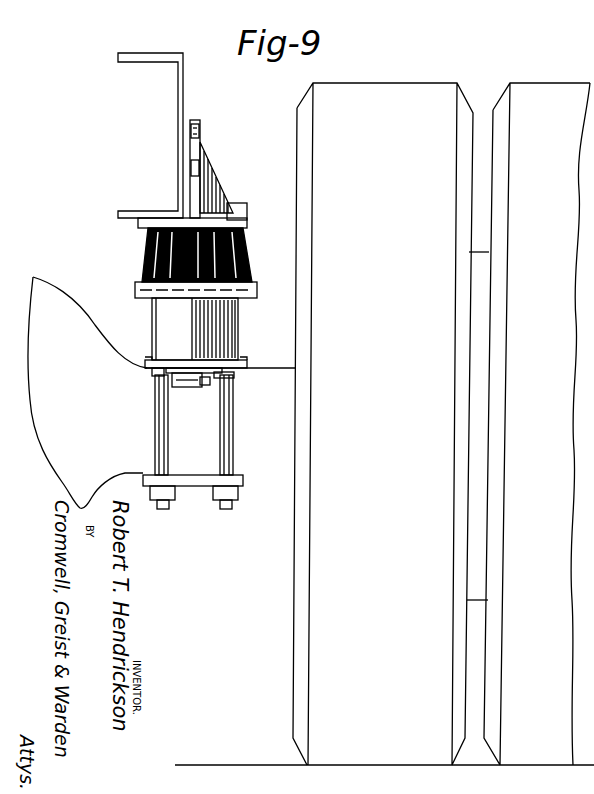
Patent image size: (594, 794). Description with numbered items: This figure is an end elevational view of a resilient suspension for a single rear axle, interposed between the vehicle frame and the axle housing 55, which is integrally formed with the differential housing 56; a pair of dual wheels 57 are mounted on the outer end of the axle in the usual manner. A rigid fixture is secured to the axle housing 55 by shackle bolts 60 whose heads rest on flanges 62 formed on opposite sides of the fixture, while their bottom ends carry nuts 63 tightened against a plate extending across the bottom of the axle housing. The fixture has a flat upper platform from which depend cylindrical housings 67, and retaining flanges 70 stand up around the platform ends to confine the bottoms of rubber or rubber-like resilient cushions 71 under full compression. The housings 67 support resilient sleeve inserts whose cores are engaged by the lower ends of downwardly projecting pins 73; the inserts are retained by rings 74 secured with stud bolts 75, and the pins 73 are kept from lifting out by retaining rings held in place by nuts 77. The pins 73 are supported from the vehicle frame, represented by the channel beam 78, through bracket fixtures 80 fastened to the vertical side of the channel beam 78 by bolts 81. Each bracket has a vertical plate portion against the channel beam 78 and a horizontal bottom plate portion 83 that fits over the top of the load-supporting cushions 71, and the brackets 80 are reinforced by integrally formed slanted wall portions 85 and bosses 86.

The axle housing 55 is at (262, 358).
The differential housing 56 is at (62, 297).
The dual wheels 57 is at (510, 85).
The shackle bolts 60 is at (219, 451).
The flanges 62 is at (148, 360).
The nuts 63 is at (217, 503).
The cylindrical housings 67 is at (240, 321).
The retaining flanges 70 is at (255, 290).
The resilient cushions 71 is at (246, 250).
The pins 73 is at (178, 388).
The rings 74 is at (163, 378).
The stud bolts 75 is at (152, 374).
The nuts 77 is at (226, 376).
The channel beam 78 is at (183, 80).
The bracket fixtures 80 is at (189, 121).
The bolts 81 is at (201, 128).
The horizontal bottom plate portions 83 is at (247, 227).
The slanted wall portions 85 is at (212, 185).
The bosses 86 is at (247, 207).